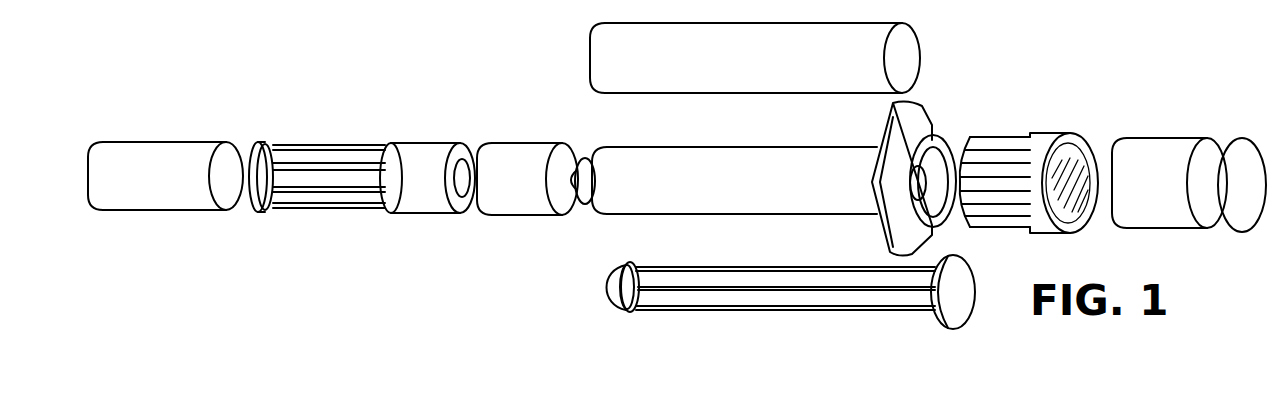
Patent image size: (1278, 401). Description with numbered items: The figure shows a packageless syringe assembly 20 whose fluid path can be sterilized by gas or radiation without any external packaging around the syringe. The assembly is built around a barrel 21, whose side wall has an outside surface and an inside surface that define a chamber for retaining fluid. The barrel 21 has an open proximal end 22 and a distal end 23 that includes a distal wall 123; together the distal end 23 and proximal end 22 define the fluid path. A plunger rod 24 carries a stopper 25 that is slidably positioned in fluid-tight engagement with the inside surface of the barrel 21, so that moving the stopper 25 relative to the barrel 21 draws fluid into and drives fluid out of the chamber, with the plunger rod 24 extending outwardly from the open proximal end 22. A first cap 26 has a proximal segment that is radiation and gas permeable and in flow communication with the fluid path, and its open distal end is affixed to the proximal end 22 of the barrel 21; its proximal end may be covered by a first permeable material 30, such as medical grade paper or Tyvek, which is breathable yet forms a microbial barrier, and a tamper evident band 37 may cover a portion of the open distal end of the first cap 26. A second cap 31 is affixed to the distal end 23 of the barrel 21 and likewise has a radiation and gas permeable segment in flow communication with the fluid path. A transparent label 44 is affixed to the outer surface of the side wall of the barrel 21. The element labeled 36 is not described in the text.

The packageless syringe assembly 20 is at (1118, 61).
The barrel 21 is at (718, 209).
The open proximal end 22 is at (937, 132).
The distal end 23 is at (587, 204).
The distal wall 123 is at (587, 158).
The plunger rod 24 is at (736, 308).
The stopper 25 is at (608, 297).
The first cap 26 is at (1022, 136).
The first permeable material 30 is at (1247, 142).
The second cap 31 is at (340, 146).
The end cap 36 is at (153, 147).
The tamper evident band 37 is at (502, 145).
The transparent label 44 is at (703, 84).